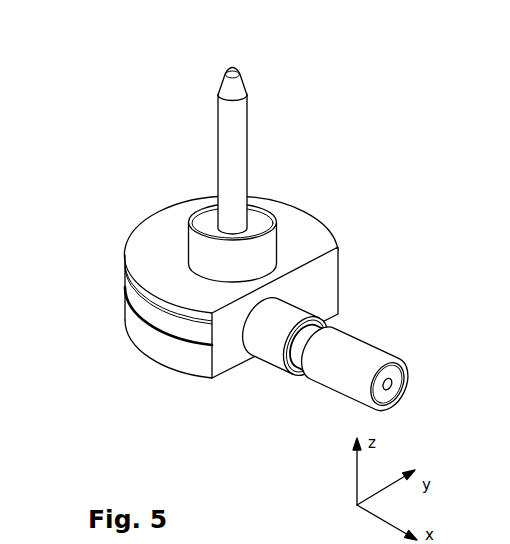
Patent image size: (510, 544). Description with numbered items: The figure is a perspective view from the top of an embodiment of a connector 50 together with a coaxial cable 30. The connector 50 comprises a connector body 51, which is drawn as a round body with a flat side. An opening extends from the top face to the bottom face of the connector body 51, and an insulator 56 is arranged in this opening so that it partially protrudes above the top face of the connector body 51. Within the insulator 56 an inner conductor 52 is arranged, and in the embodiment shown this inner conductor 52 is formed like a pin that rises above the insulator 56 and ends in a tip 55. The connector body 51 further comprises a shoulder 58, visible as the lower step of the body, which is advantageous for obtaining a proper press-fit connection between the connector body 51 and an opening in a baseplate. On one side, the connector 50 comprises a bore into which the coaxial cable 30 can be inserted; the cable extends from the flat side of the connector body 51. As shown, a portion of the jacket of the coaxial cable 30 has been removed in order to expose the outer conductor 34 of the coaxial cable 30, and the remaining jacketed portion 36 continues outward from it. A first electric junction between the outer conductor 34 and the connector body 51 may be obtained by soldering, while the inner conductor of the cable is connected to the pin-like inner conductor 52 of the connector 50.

The coaxial cable 30 is at (329, 375).
The outer conductor 34 is at (310, 348).
The second cylindrical connector portion 36 is at (346, 376).
The connector 50 is at (257, 257).
The connector body 51 is at (170, 222).
The inner conductor 52 is at (332, 134).
The pin tip 55 is at (262, 89).
The insulator 56 is at (208, 260).
The shoulder 58 is at (160, 332).